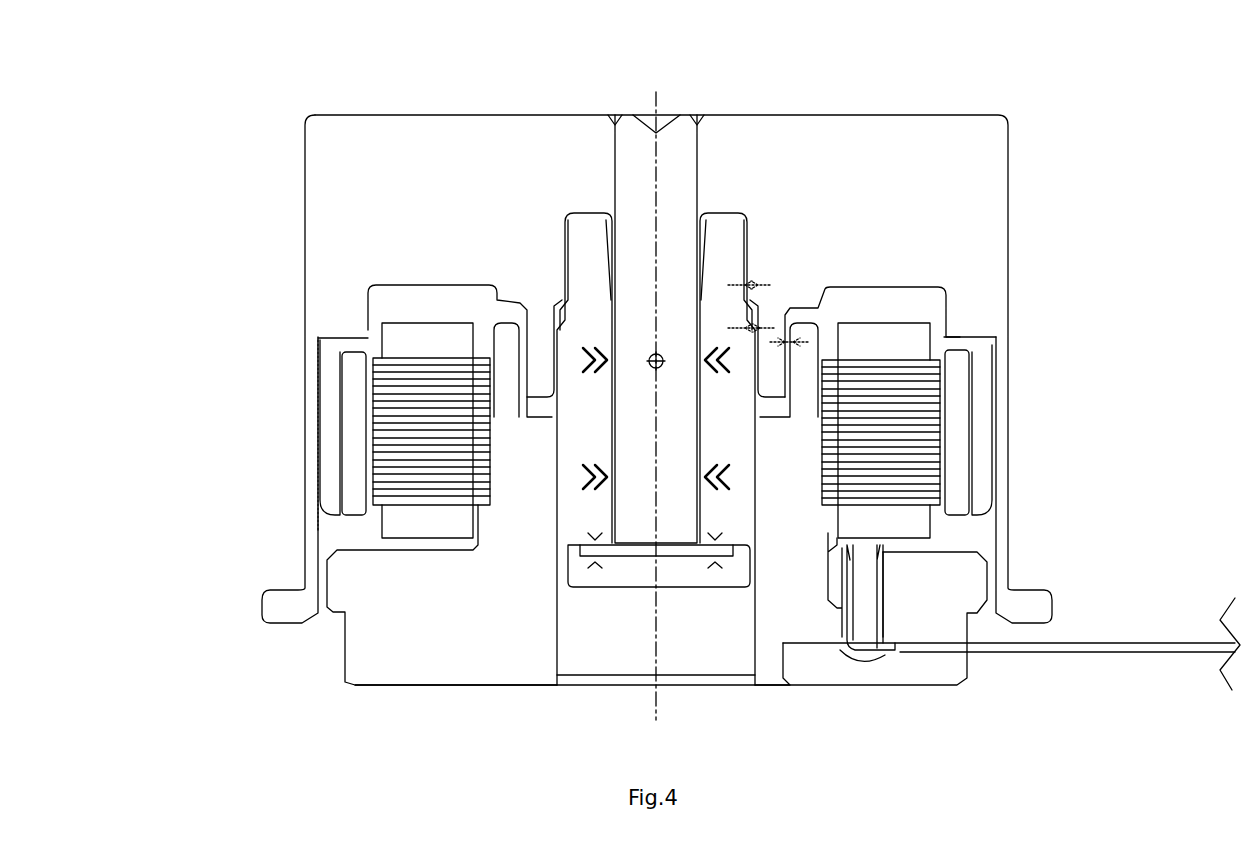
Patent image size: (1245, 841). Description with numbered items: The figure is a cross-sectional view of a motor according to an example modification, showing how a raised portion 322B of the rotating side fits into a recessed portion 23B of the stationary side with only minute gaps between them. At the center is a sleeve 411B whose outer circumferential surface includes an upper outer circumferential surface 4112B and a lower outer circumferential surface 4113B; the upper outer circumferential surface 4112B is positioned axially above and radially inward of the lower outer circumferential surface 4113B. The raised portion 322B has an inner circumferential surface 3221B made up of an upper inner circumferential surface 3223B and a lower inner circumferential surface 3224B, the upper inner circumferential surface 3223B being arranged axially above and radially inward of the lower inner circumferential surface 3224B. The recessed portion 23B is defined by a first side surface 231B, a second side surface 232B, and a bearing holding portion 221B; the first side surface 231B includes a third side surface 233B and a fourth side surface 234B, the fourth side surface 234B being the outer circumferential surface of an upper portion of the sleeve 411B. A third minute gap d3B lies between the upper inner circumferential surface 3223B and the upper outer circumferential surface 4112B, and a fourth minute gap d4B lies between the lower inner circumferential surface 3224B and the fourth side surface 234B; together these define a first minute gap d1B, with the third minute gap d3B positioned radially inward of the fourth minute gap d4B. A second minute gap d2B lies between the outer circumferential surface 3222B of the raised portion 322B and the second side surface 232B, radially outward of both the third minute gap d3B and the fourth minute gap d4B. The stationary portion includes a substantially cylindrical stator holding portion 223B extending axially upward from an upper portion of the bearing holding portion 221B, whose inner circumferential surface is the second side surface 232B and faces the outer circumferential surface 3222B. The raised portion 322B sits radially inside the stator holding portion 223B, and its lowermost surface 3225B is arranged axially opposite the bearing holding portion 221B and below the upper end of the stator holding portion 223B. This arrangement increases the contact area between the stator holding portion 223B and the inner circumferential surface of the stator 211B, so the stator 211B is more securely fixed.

The raised portion 322B is at (777, 243).
The inner circumferential surface 3221B is at (880, 446).
The upper inner circumferential surface 3223B is at (752, 250).
The lower inner circumferential surface 3224B is at (760, 314).
The sleeve 411B is at (592, 235).
The upper outer circumferential surface 4112B is at (636, 355).
The lower outer circumferential surface 4113B is at (556, 360).
The recessed portion 23B is at (553, 335).
The first side surface 231B is at (351, 485).
The second side surface 232B is at (522, 368).
The fourth side surface 234B is at (575, 392).
The third side surface 233B is at (590, 442).
The lowermost surface 3225B is at (822, 360).
The outer circumferential surface 3222B is at (810, 395).
The stator holding portion 223B is at (940, 448).
The stator 211B is at (917, 475).
The bearing holding portion 221B is at (772, 453).
The first minute gap d1B is at (703, 292).
The second minute gap d2B is at (802, 353).
The third minute gap d3B is at (741, 297).
The fourth minute gap d4B is at (743, 323).